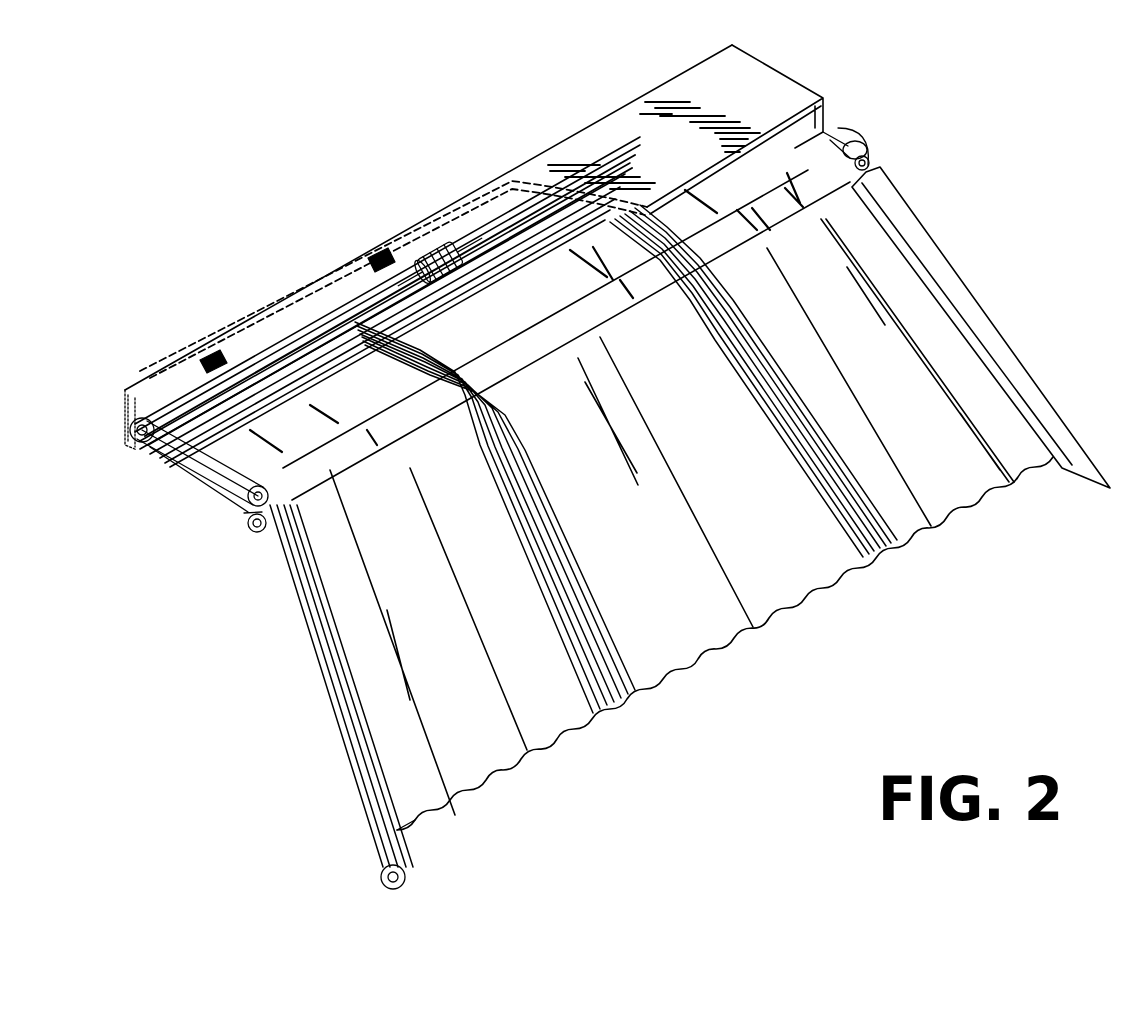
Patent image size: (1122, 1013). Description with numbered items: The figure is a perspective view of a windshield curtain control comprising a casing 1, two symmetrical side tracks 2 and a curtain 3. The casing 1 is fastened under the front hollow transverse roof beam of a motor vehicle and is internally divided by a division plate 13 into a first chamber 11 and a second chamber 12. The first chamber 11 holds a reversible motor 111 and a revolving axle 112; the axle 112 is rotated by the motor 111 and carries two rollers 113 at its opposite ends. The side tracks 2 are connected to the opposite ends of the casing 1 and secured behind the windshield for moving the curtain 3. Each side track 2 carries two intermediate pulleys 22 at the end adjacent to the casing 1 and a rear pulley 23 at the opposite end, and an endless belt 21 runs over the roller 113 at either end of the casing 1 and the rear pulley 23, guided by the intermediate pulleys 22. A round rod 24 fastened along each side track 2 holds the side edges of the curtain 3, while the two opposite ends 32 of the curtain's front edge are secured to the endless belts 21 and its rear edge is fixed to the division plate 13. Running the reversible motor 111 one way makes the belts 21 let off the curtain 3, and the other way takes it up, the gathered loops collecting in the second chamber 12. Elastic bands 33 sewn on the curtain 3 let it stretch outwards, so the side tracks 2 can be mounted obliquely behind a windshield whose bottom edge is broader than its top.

The casing 1 is at (190, 356).
The first chamber 11 is at (122, 410).
The reversible motor 111 is at (450, 248).
The revolving axle 112 is at (330, 323).
The roller 113 is at (147, 450).
The second chamber 12 is at (200, 483).
The division plate 13 is at (568, 195).
The side track 2 is at (946, 250).
The endless belt 21 is at (833, 130).
The intermediate pulley 22 is at (860, 157).
The rear pulley 23 is at (384, 877).
The round rod 24 is at (843, 140).
The curtain 3 is at (705, 633).
The end of the front edge of the curtain 32 is at (402, 832).
The elastic band 33 is at (607, 710).